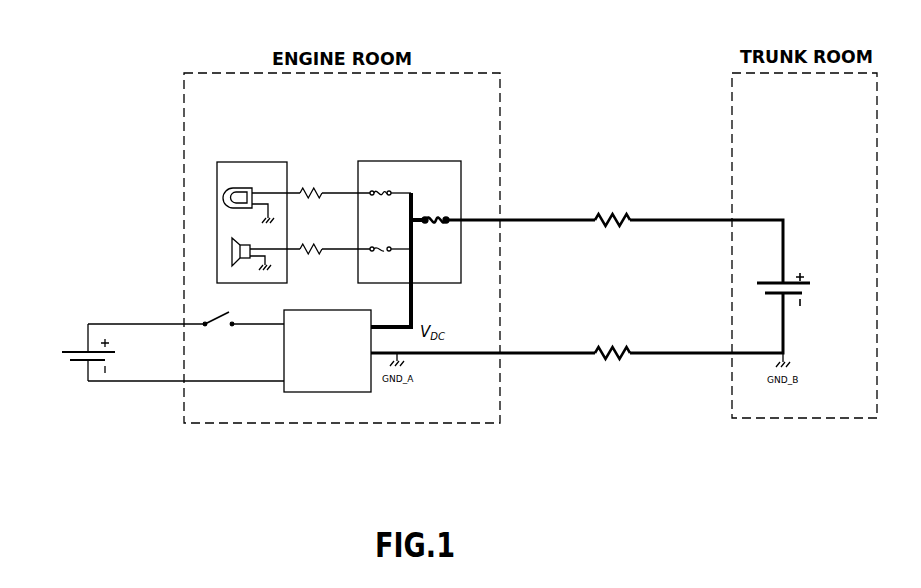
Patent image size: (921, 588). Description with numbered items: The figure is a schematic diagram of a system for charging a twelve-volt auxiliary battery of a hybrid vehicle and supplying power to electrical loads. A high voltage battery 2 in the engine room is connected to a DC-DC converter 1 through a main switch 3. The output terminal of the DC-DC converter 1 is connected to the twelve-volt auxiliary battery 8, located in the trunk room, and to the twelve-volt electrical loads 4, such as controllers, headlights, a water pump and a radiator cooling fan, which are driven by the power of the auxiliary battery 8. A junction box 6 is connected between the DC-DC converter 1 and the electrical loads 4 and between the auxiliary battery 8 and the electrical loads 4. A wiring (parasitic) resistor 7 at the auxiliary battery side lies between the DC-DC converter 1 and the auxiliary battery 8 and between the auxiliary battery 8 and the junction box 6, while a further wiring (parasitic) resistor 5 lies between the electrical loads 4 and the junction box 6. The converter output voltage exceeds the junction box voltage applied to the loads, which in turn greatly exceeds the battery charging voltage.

The DC-DC converter 1 is at (333, 397).
The high voltage battery 2 is at (80, 384).
The main switch 3 is at (207, 303).
The electrical loads 4 is at (243, 158).
The wiring (parasitic) resistor 5 is at (321, 236).
The junction box 6 is at (413, 160).
The wiring (parasitic) resistor at the auxiliary battery side 7 is at (630, 332).
The 12V auxiliary battery 8 is at (804, 226).